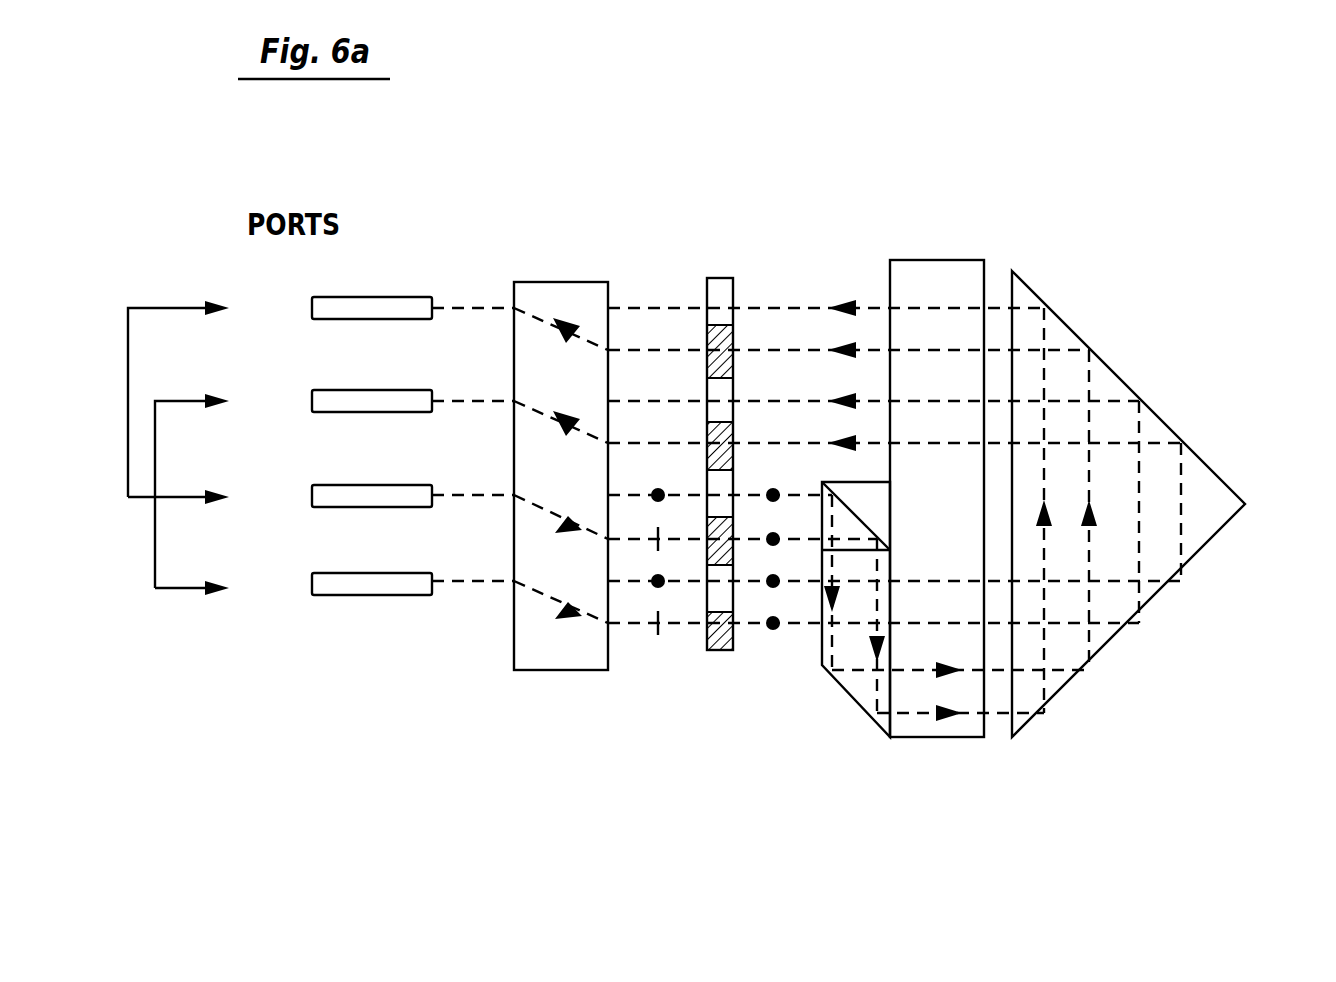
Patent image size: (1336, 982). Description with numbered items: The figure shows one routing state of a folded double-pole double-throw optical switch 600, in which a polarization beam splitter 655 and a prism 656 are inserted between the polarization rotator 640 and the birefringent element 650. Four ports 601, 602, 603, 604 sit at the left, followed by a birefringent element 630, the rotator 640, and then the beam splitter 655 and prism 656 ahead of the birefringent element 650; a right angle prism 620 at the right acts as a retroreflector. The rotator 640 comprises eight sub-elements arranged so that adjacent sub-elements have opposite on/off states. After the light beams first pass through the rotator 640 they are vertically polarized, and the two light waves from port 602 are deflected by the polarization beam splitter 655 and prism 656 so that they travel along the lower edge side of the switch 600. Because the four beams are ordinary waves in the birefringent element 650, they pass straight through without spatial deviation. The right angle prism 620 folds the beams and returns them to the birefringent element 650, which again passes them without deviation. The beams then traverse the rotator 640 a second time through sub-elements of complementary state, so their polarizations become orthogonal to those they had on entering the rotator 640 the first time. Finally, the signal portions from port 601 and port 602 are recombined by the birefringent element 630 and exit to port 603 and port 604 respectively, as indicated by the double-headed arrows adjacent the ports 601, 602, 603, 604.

The switch 600 is at (942, 223).
The port 601 is at (338, 573).
The port 602 is at (339, 485).
The port 603 is at (337, 390).
The port 604 is at (336, 297).
The right angle prism 620 is at (1122, 378).
The birefringent element 630 is at (560, 282).
The polarization rotator 640 is at (718, 278).
The birefringent element 650 is at (940, 738).
The polarization beam splitter 655 is at (822, 482).
The prism 656 is at (848, 694).